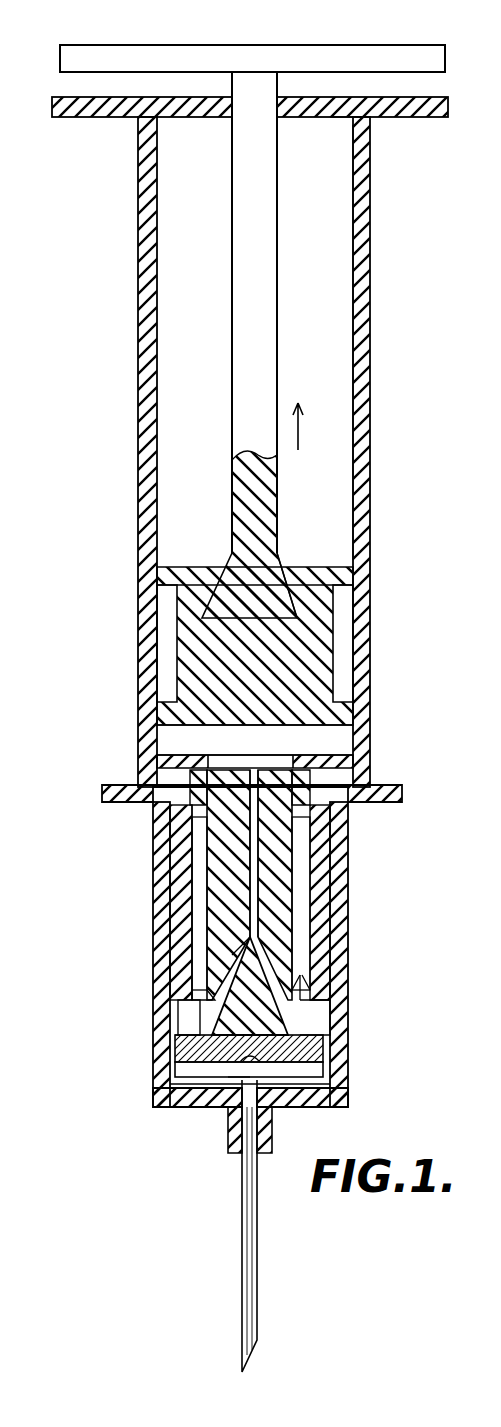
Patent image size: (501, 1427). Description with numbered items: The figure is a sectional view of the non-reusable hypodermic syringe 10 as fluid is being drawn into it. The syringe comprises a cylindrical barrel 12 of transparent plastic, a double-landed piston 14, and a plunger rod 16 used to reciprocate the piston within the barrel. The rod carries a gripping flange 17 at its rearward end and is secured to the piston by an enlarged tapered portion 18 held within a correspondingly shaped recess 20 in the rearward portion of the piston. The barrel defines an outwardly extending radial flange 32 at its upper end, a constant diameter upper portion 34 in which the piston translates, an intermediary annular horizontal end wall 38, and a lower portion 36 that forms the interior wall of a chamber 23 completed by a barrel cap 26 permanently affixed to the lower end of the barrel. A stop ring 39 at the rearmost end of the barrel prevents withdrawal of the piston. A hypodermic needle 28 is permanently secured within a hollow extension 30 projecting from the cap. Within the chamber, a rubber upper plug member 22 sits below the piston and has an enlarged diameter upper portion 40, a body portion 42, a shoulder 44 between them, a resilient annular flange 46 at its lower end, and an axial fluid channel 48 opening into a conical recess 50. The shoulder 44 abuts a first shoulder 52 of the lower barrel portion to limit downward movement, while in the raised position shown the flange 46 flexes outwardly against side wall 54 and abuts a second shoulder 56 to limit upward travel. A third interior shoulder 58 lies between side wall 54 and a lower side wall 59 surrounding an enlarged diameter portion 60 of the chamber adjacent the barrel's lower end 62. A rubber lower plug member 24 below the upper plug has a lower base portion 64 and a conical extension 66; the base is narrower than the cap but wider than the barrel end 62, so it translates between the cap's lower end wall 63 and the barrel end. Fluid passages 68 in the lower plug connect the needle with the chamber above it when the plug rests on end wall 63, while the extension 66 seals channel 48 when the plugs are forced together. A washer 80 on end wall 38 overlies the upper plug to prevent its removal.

The hypodermic syringe 10 is at (426, 194).
The cylindrical barrel 12 is at (372, 440).
The double-landed piston 14 is at (355, 650).
The plunger rod 16 is at (277, 236).
The gripping flange 17 is at (405, 55).
The enlarged tapered portion 18 is at (335, 595).
The recess 20 is at (287, 605).
The upper plug member 22 is at (320, 880).
The chamber 23 is at (320, 905).
The lower plug member 24 is at (300, 1025).
The barrel cap 26 is at (350, 1105).
The hypodermic needle 28 is at (257, 1265).
The hollow extension 30 is at (275, 1140).
The radial flange 32 is at (448, 105).
The upper portion 34 is at (372, 325).
The lower portion 36 is at (350, 940).
The annular horizontal end wall 38 is at (355, 760).
The stop ring 39 is at (335, 118).
The enlarged diameter upper portion 40 is at (205, 808).
The body portion 42 is at (212, 888).
The shoulder 44 is at (200, 845).
The resilient annular flange 46 is at (190, 1015).
The fluid channel 48 is at (250, 855).
The conical recess 50 is at (215, 942).
The first shoulder 52 is at (312, 838).
The side wall 54 is at (320, 990).
The second shoulder 56 is at (300, 970).
The third interior shoulder 58 is at (320, 1010).
The lower side wall 59 is at (170, 1050).
The enlarged diameter portion 60 is at (185, 1040).
The lower end 62 is at (320, 1045).
The lower end wall 63 is at (330, 1085).
The lower base portion 64 is at (325, 1070).
The conical extension 66 is at (232, 955).
The fluid passages 68 is at (237, 1108).
The washer 80 is at (330, 745).